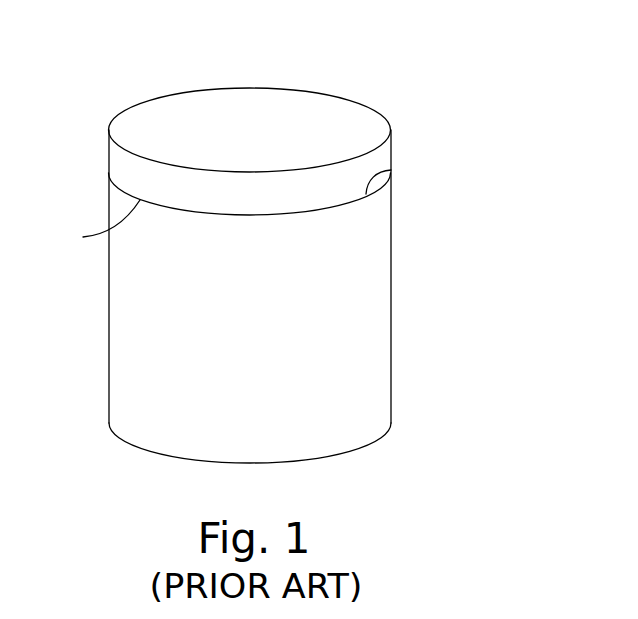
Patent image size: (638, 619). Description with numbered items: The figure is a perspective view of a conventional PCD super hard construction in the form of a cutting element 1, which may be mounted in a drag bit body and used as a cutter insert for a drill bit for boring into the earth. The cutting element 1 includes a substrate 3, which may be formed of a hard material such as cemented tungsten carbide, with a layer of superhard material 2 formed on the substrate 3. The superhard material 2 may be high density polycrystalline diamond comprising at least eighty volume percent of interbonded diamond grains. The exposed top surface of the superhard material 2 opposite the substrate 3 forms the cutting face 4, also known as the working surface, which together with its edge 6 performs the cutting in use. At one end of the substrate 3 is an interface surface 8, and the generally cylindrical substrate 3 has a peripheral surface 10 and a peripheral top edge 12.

The cutting element 1 is at (137, 63).
The superhard material 2 is at (391, 155).
The substrate 3 is at (393, 300).
The cutting face 4 is at (257, 145).
The edge 6 is at (391, 137).
The interface surface 8 is at (380, 176).
The peripheral surface 10 is at (238, 330).
The peripheral top edge 12 is at (96, 225).